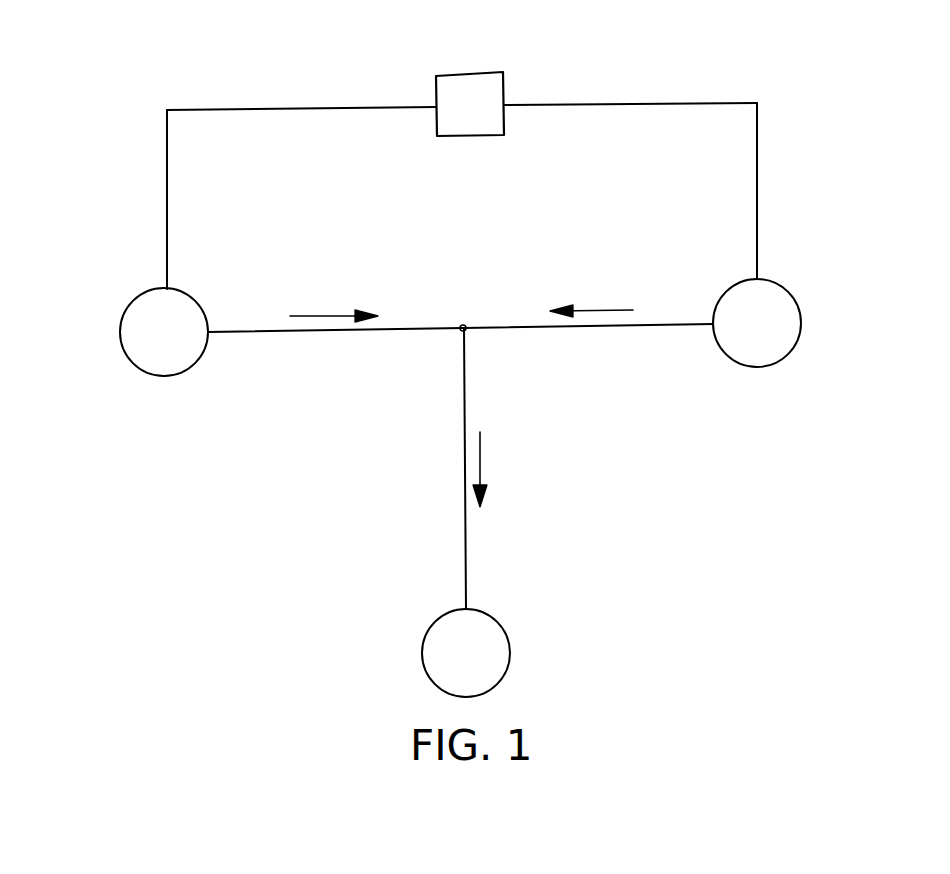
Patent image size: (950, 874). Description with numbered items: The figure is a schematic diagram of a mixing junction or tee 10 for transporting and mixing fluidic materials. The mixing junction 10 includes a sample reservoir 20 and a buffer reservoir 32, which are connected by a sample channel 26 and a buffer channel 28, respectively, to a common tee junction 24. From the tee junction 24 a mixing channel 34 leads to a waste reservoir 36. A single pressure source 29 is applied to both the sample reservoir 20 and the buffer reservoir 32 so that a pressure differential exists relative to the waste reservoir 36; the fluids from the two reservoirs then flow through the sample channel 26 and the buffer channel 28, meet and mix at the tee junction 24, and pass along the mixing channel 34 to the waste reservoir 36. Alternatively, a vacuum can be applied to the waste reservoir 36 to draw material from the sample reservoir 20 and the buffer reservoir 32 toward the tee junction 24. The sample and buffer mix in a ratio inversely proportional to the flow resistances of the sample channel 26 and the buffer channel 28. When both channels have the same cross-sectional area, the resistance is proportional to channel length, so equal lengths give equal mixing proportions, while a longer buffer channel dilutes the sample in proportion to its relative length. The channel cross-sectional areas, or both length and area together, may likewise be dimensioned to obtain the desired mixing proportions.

The mixing junction 10 is at (272, 568).
The sample reservoir 20 is at (120, 334).
The tee junction 24 is at (465, 328).
The sample channel 26 is at (262, 330).
The buffer channel 28 is at (663, 323).
The pressure source 29 is at (501, 76).
The buffer reservoir 32 is at (800, 318).
The mixing channel 34 is at (465, 410).
The waste reservoir 36 is at (511, 644).